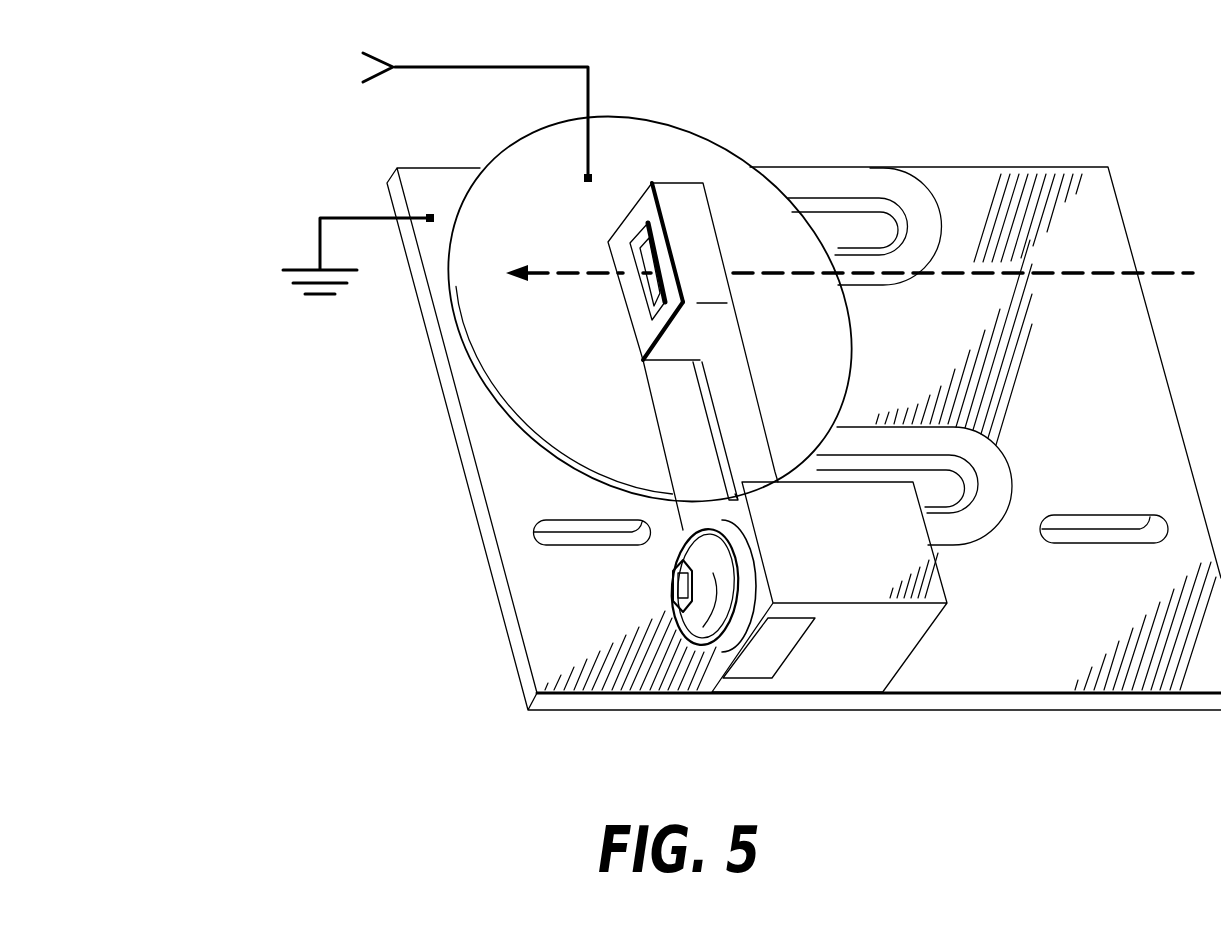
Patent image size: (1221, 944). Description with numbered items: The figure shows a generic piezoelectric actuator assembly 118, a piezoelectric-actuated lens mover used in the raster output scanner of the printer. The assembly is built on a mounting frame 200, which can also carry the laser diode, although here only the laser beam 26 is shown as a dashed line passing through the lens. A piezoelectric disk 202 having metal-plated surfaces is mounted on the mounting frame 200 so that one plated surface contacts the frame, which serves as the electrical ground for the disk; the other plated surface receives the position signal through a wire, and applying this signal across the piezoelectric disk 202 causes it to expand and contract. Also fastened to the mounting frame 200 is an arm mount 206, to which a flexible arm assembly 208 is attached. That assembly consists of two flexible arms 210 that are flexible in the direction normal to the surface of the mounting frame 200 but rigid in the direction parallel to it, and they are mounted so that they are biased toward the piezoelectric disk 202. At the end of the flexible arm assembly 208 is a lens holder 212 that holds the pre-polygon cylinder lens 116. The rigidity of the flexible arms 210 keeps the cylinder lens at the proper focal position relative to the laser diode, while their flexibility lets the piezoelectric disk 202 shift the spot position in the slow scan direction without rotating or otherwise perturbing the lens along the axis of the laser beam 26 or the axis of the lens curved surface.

The piezoelectric actuator assembly 118 is at (520, 393).
The mounting frame 200 is at (1053, 170).
The piezoelectric disk 202 is at (627, 138).
The arm mount 206 is at (840, 677).
The flexible arm assembly 208 is at (774, 380).
The flexible arms 210 is at (727, 395).
The lens holder 212 is at (640, 333).
The pre-polygon cylinder lens 116 is at (653, 295).
The laser beam 26 is at (1157, 267).